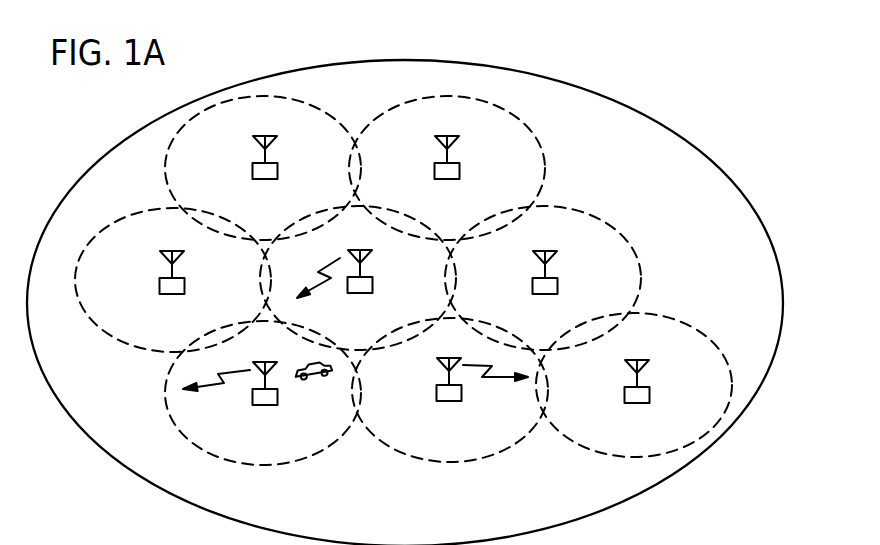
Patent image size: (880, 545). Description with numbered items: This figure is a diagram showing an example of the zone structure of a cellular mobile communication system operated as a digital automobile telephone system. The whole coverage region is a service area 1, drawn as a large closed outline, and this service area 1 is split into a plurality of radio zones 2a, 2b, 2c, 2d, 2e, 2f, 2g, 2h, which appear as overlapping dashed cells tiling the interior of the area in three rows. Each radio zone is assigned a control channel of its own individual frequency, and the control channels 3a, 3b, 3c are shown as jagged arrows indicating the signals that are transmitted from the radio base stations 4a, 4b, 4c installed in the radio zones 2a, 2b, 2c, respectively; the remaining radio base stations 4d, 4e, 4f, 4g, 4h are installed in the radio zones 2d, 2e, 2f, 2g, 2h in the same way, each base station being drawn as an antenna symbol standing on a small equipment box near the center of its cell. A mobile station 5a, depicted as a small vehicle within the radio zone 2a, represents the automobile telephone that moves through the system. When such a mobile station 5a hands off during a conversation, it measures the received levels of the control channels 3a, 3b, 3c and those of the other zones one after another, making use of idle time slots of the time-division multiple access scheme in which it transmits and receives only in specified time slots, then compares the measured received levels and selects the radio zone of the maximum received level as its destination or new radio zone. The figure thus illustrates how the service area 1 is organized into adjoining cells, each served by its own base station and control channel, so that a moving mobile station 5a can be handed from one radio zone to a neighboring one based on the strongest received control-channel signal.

The service area 1 is at (687, 147).
The radio zone 2a is at (300, 461).
The radio zone 2b is at (388, 349).
The radio zone 2c is at (466, 460).
The radio zone 2d is at (598, 454).
The radio zone 2e is at (635, 248).
The radio zone 2f is at (529, 127).
The radio zone 2g is at (167, 170).
The radio zone 2h is at (90, 318).
The control channel 3a is at (237, 373).
The control channel 3b is at (325, 283).
The control channel 3c is at (492, 378).
The radio base station 4a is at (278, 402).
The radio base station 4b is at (373, 285).
The radio base station 4c is at (436, 397).
The radio base station 4d is at (650, 395).
The radio base station 4e is at (558, 285).
The radio base station 4f is at (461, 172).
The radio base station 4g is at (278, 172).
The radio base station 4h is at (185, 287).
The mobile station 5a is at (315, 384).